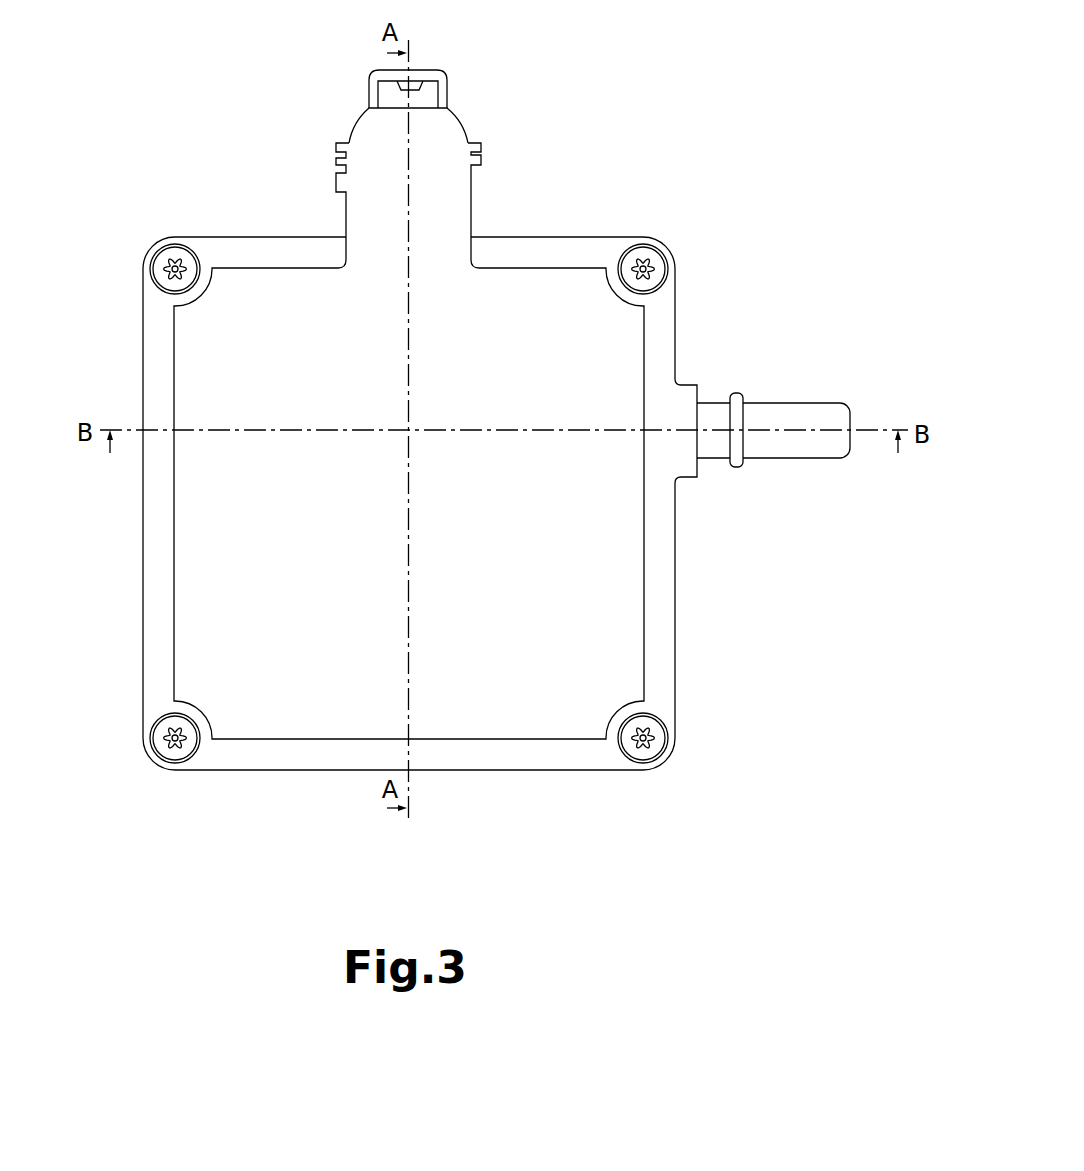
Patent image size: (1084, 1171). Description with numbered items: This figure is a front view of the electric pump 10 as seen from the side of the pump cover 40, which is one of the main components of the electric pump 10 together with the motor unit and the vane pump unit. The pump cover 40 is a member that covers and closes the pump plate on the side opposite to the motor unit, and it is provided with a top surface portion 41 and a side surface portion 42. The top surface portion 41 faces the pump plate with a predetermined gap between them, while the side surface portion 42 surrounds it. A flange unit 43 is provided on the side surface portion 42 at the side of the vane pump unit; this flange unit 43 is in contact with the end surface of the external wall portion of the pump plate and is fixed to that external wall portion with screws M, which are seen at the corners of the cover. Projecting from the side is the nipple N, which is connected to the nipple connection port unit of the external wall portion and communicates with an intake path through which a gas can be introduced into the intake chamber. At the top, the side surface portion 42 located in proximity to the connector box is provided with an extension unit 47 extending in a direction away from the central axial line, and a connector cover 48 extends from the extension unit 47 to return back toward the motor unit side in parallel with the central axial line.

The electric pump 10 is at (550, 98).
The pump cover 40 is at (527, 722).
The top surface portion 41 is at (278, 723).
The side surface portion 42 is at (268, 268).
The flange unit 43 is at (660, 527).
The extension unit 47 is at (445, 217).
The connector cover 48 is at (352, 122).
The nipple N is at (795, 410).
The screws M is at (645, 757).